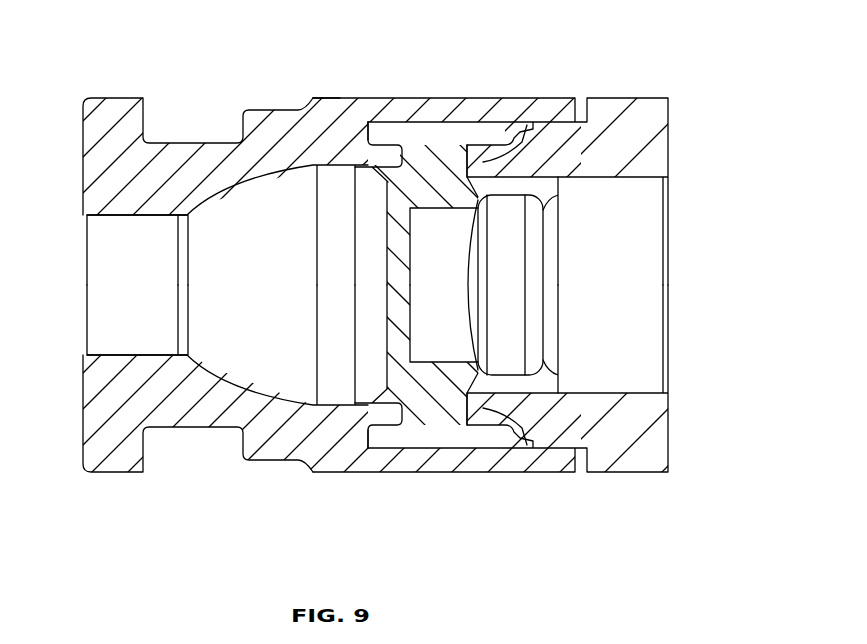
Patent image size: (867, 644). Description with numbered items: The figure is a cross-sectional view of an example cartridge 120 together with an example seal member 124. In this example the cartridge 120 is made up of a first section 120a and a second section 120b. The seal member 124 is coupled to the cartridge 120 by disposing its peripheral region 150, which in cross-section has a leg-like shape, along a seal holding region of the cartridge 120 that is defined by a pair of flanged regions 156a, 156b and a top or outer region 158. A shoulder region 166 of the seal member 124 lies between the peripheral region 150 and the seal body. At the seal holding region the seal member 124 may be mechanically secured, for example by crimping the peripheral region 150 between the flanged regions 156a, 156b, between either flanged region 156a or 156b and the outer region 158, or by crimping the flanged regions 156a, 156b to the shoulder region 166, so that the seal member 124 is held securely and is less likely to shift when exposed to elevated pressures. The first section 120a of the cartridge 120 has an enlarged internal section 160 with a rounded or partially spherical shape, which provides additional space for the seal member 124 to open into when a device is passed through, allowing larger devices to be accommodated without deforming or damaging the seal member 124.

The cartridge 120 is at (323, 107).
The first section 120a is at (188, 173).
The second section 120b is at (630, 137).
The seal member 124 is at (376, 135).
The peripheral region 150 is at (437, 160).
The flanged region 156a is at (410, 130).
The flanged region 156b is at (545, 128).
The outer region 158 is at (503, 125).
The enlarged internal section 160 is at (250, 188).
The shoulder region 166 is at (470, 140).